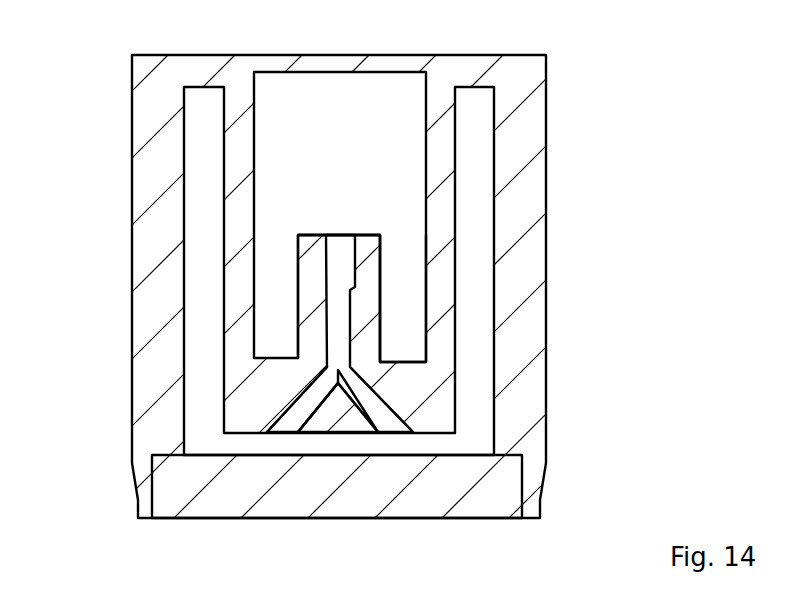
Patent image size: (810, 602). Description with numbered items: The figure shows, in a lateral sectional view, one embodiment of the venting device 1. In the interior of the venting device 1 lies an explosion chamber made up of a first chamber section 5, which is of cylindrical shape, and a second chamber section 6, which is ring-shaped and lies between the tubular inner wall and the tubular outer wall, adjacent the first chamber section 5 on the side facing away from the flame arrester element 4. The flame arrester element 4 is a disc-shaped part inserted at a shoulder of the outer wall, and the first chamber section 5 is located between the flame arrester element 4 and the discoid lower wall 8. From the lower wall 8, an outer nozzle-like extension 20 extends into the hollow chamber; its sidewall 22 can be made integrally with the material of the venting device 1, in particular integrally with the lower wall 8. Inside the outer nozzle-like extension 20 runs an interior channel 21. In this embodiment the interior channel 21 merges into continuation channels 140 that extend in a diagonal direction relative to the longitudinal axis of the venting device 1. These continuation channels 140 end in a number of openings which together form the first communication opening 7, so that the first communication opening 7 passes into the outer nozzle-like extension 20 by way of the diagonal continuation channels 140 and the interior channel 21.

The venting device 1 is at (97, 110).
The flame arrester element 4 is at (447, 488).
The first chamber section 5 is at (477, 432).
The second chamber section 6 is at (482, 212).
The first communication opening 7 is at (300, 410).
The discoid lower wall 8 is at (398, 362).
The outer nozzle-like extension 20 is at (312, 233).
The interior channel 21 is at (342, 247).
The sidewall 22 is at (312, 298).
The continuation channels 140 is at (365, 430).